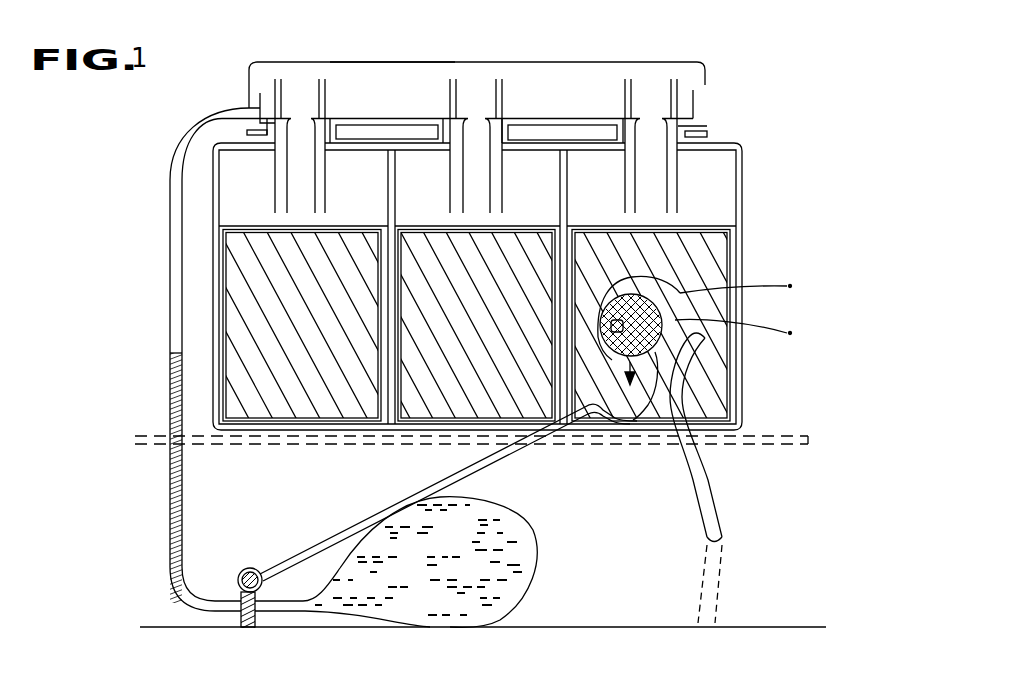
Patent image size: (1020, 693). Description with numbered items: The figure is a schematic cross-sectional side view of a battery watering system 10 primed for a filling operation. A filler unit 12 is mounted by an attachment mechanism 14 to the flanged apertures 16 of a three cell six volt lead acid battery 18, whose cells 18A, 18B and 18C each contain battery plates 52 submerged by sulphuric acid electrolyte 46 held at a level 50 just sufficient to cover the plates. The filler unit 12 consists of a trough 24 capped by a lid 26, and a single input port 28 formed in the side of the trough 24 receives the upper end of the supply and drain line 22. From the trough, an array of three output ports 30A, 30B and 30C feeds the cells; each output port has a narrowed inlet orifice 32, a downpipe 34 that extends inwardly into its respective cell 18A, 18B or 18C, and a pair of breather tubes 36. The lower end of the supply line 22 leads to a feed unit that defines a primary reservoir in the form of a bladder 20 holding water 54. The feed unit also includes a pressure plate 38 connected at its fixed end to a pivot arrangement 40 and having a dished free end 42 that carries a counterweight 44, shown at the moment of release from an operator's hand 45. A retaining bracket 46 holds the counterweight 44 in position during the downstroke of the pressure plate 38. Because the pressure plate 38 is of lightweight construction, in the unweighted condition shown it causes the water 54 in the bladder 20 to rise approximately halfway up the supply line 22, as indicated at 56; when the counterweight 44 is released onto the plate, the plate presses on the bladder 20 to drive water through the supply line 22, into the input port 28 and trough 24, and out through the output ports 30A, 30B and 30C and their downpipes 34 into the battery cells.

The battery watering system 10 is at (137, 237).
The filler unit 12 is at (511, 60).
The attachment mechanism 14 is at (412, 124).
The flanged apertures 16 is at (249, 108).
The lead acid battery 18 is at (748, 253).
The cell 18A is at (253, 232).
The cell 18B is at (433, 230).
The cell 18C is at (605, 230).
The bladder 20 is at (530, 585).
The supply and drain line 22 is at (170, 320).
The trough 24 is at (693, 105).
The lid 26 is at (445, 62).
The input port 28 is at (260, 96).
The output port 30A is at (298, 108).
The output port 30B is at (475, 115).
The output port 30C is at (650, 112).
The narrowed inlet orifice 32 is at (305, 112).
The downpipe 34 is at (315, 184).
The breather tubes 36 is at (277, 75).
The pressure plate 38 is at (338, 536).
The pivot arrangement 40 is at (250, 567).
The dished free end 42 is at (603, 424).
The counterweight 44 is at (639, 425).
The operator's hand 45 is at (680, 293).
The retaining bracket 46 is at (508, 230).
The electrolyte level 50 is at (353, 229).
The battery plates 52 is at (690, 230).
The water 54 is at (498, 542).
The water level in supply line 56 is at (160, 352).